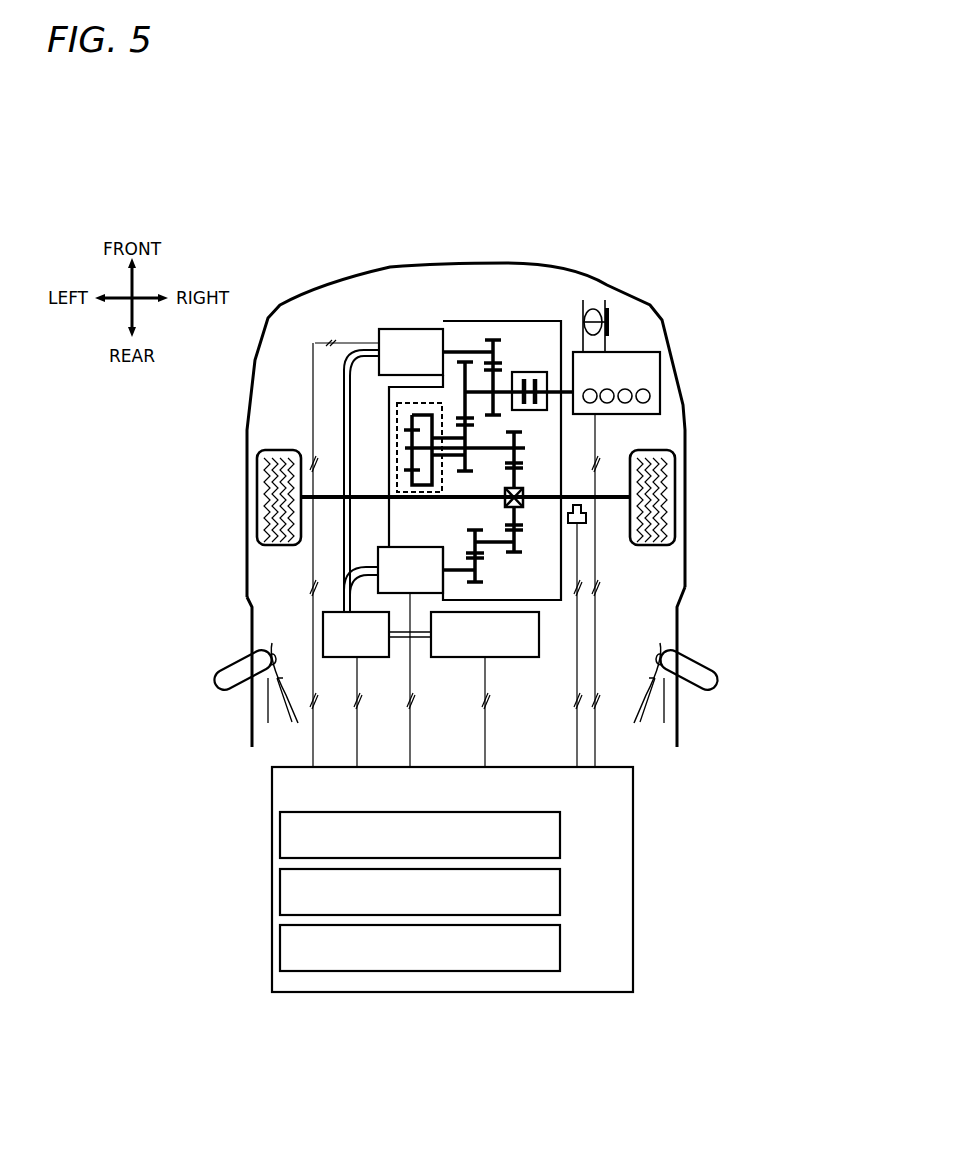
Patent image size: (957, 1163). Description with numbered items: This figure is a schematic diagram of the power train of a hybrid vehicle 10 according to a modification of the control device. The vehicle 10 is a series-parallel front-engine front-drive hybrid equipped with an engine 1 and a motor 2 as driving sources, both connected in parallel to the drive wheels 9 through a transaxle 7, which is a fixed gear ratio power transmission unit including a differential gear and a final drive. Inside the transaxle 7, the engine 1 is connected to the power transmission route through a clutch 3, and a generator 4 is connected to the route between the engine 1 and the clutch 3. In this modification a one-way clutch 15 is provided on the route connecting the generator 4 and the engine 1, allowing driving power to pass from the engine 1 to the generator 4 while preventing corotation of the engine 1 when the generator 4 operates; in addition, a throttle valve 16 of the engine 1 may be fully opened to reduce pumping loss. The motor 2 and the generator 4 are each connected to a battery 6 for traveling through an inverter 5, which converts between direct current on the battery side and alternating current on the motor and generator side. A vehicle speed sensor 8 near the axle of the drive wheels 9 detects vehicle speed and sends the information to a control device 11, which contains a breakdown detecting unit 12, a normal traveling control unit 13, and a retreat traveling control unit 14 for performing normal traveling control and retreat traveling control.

The engine 1 is at (660, 380).
The motor 2 is at (368, 563).
The clutch 3 is at (397, 422).
The generator 4 is at (400, 329).
The inverter 5 is at (323, 632).
The battery 6 is at (539, 634).
The transaxle 7 is at (483, 321).
The vehicle speed sensor 8 is at (584, 525).
The drive wheels 9 is at (257, 497).
The vehicle 10 is at (740, 298).
The control device 11 is at (482, 879).
The breakdown detecting unit 12 is at (561, 836).
The normal traveling control unit 13 is at (561, 894).
The retreat traveling control unit 14 is at (561, 951).
The one-way clutch 15 is at (533, 372).
The throttle valve 16 is at (611, 320).